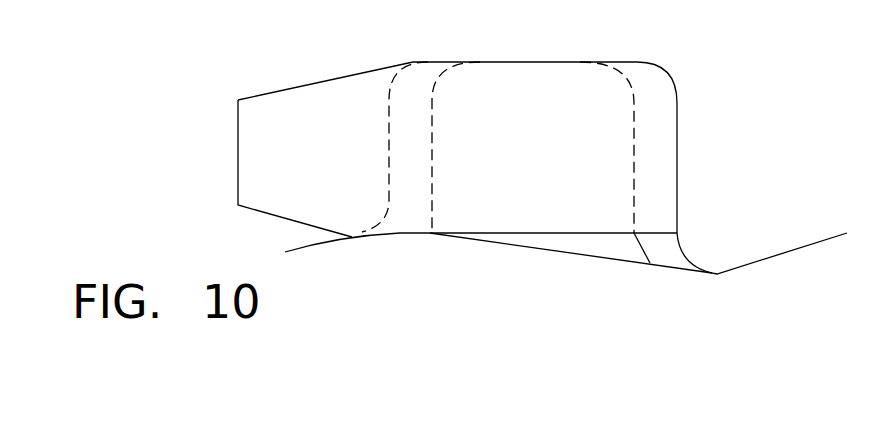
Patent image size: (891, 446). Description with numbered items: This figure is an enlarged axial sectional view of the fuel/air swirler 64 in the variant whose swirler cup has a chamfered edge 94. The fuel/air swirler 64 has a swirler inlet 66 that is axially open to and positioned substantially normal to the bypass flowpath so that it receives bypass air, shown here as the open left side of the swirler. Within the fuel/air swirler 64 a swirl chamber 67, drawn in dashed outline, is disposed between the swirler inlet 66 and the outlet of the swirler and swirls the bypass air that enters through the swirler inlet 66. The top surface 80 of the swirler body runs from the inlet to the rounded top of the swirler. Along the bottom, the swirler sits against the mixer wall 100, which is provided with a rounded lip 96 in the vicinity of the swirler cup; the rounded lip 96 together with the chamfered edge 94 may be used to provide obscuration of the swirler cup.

The fuel/air swirler 64 is at (623, 62).
The swirler inlet 66 is at (238, 157).
The swirl chamber 67 is at (634, 124).
The top surface 80 is at (330, 79).
The chamfered edge 94 is at (523, 249).
The rounded lip 96 is at (692, 263).
The mixer wall 100 is at (402, 237).